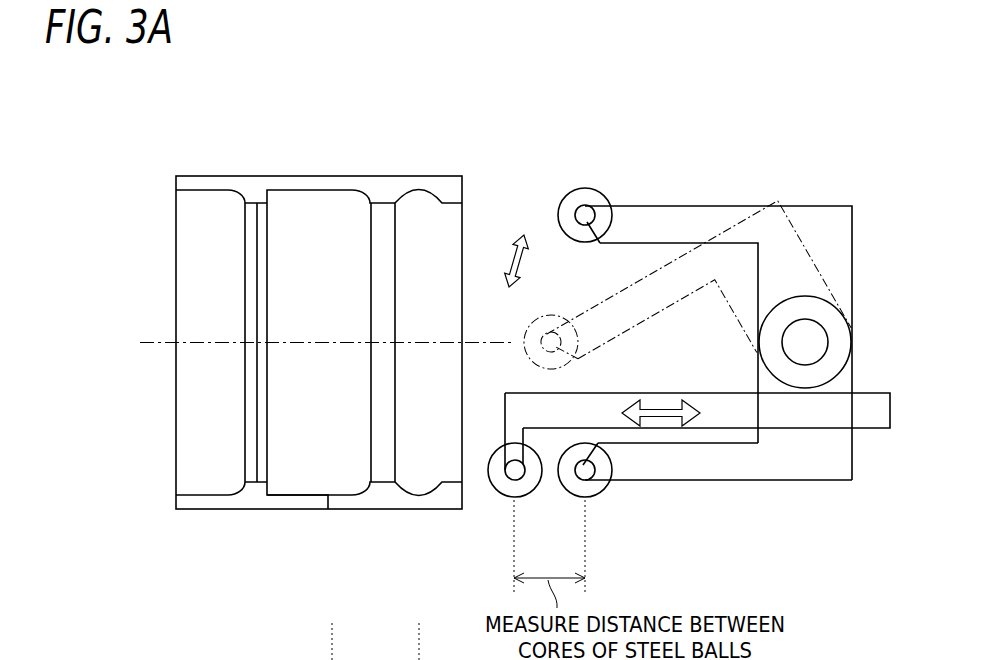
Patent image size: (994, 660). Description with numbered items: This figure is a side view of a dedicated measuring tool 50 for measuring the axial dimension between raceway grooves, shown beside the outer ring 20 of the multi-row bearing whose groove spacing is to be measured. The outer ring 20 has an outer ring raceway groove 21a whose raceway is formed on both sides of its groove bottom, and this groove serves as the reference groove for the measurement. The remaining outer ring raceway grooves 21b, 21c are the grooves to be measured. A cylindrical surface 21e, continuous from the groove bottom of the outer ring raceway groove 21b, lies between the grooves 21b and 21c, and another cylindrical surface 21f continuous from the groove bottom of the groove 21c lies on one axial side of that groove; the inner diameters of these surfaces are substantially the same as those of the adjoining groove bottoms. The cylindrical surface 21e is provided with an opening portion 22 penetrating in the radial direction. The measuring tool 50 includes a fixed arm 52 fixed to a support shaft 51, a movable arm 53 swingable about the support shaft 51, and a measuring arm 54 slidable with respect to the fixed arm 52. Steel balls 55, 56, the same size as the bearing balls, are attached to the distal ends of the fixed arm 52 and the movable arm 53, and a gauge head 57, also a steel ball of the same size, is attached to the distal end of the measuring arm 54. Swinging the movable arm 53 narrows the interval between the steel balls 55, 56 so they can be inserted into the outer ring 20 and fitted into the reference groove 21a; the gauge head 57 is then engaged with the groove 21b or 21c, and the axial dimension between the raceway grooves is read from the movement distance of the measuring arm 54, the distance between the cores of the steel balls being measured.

The outer ring 20 is at (295, 336).
The outer ring raceway groove 21a is at (413, 194).
The outer ring raceway groove 21b is at (360, 194).
The outer ring raceway groove 21c is at (233, 196).
The cylindrical surface 21e is at (293, 193).
The cylindrical surface 21f is at (192, 192).
The opening portion 22 is at (283, 498).
The measuring tool 50 is at (710, 311).
The support shaft 51 is at (813, 340).
The fixed arm 52 is at (733, 470).
The movable arm 53 is at (695, 218).
The measuring arm 54 is at (875, 410).
The steel ball 55 is at (590, 487).
The steel ball 56 is at (550, 316).
The gauge head 57 is at (497, 481).